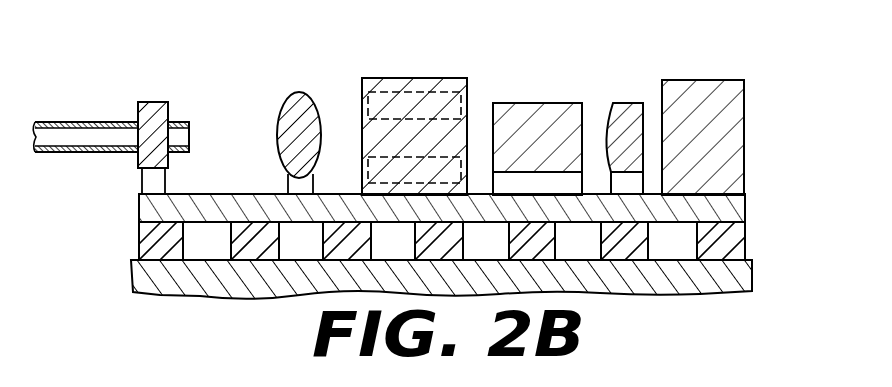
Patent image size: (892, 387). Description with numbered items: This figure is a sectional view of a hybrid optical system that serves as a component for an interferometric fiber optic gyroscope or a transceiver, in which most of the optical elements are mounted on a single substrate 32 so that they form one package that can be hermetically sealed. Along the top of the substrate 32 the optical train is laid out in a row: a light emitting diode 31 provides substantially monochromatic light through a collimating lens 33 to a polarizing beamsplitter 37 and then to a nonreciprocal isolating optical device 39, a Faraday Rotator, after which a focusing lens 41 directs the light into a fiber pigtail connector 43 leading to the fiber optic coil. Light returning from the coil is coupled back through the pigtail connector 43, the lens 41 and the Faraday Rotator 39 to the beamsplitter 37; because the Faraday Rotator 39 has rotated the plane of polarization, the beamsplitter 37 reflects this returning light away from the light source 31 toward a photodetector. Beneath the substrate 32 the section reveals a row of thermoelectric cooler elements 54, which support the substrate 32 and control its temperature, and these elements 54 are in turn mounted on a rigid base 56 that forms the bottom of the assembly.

The light emitting diode 31 is at (682, 79).
The substrate 32 is at (736, 212).
The collimating lens 33 is at (625, 103).
The polarizing beamsplitter 37 is at (528, 103).
The nonreciprocal isolating optical device 39 is at (403, 78).
The focusing lens 41 is at (299, 92).
The fiber pigtail connector 43 is at (180, 122).
The thermoelectric cooler elements 54 is at (750, 222).
The rigid base 56 is at (752, 279).